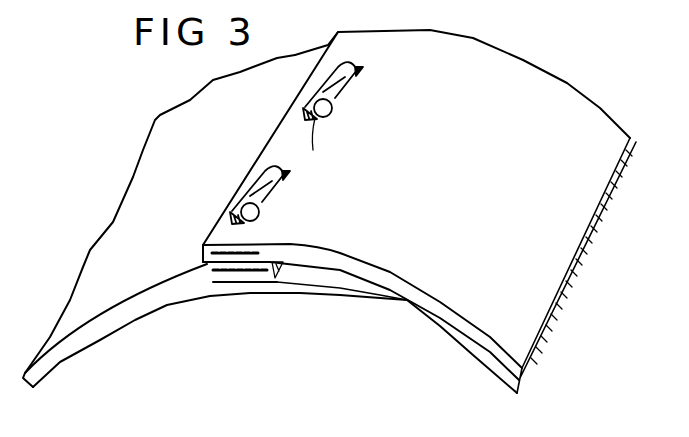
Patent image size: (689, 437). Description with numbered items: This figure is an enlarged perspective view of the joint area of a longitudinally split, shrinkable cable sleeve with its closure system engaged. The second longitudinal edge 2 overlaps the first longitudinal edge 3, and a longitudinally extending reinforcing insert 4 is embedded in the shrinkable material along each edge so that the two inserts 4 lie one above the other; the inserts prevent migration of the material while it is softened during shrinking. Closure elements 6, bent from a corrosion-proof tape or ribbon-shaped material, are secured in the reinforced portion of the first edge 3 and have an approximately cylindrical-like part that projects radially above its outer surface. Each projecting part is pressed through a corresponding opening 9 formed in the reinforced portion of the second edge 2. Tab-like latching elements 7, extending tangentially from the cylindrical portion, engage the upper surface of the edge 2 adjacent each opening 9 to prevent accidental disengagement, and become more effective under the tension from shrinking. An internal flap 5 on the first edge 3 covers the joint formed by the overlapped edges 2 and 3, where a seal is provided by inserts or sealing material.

The second longitudinal edge 2 is at (381, 36).
The first longitudinal edge 3 is at (268, 262).
The reinforcing insert 4 is at (206, 254).
The internal flap 5 is at (313, 288).
The closure element 6 is at (344, 89).
The latching element 7 is at (325, 80).
The opening 9 is at (285, 178).